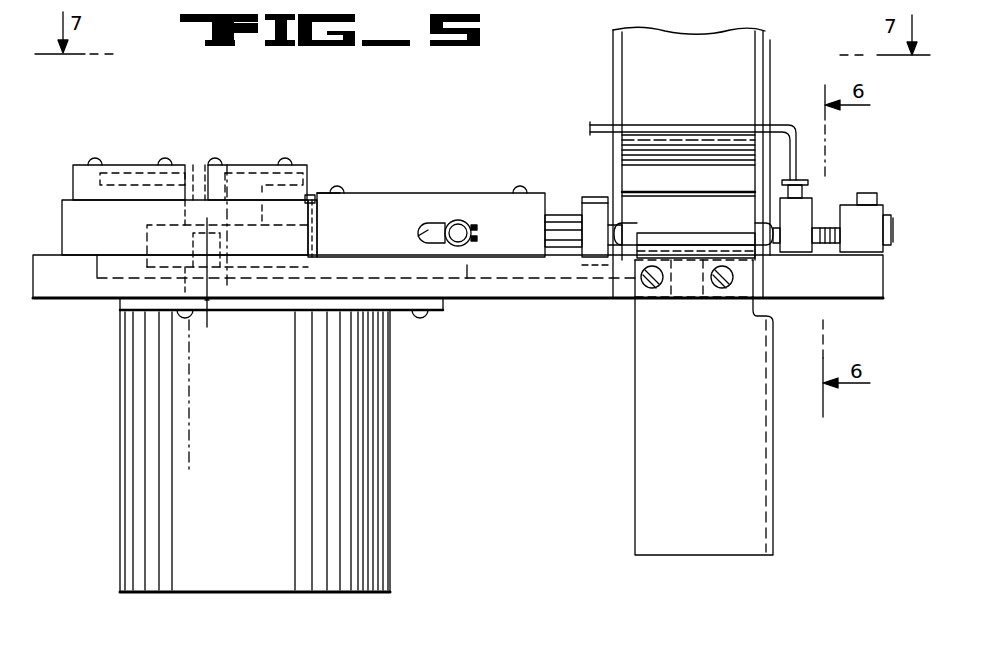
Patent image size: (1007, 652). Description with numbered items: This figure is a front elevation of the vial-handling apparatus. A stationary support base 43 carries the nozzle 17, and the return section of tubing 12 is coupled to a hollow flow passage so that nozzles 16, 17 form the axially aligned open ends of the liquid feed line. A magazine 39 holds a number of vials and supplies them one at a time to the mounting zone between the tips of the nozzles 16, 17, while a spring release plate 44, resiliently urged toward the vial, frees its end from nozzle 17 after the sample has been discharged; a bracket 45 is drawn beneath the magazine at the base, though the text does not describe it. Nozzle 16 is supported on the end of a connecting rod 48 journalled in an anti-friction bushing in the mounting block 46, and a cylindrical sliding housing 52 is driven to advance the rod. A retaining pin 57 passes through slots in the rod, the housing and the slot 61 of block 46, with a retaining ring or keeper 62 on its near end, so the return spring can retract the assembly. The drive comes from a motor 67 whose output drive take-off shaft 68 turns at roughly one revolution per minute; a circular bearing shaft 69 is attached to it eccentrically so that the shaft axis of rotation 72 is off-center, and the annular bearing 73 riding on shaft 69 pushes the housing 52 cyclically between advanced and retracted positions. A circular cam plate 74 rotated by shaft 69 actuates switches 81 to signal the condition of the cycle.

The return section of tubing 12 is at (590, 128).
The tapered nozzle 16 is at (637, 226).
The tapered nozzle 17 is at (760, 228).
The magazine 39 is at (600, 72).
The stationary support base 43 is at (535, 297).
The spring release plate 44 is at (805, 197).
The mounting bracket 45 is at (704, 402).
The mounting block 46 is at (372, 225).
The connecting rod 48 is at (557, 220).
The cylindrical sliding housing 52 is at (318, 194).
The retaining pin 57 is at (432, 223).
The slot 61 is at (418, 236).
The retaining ring or keeper 62 is at (458, 222).
The motor 67 is at (246, 442).
The output drive take-off shaft 68 is at (222, 240).
The circular bearing shaft 69 is at (315, 195).
The shaft axis of rotation 72 is at (208, 330).
The annular bearing 73 is at (145, 258).
The circular cam plate 74 is at (190, 180).
The switches 81 is at (238, 165).